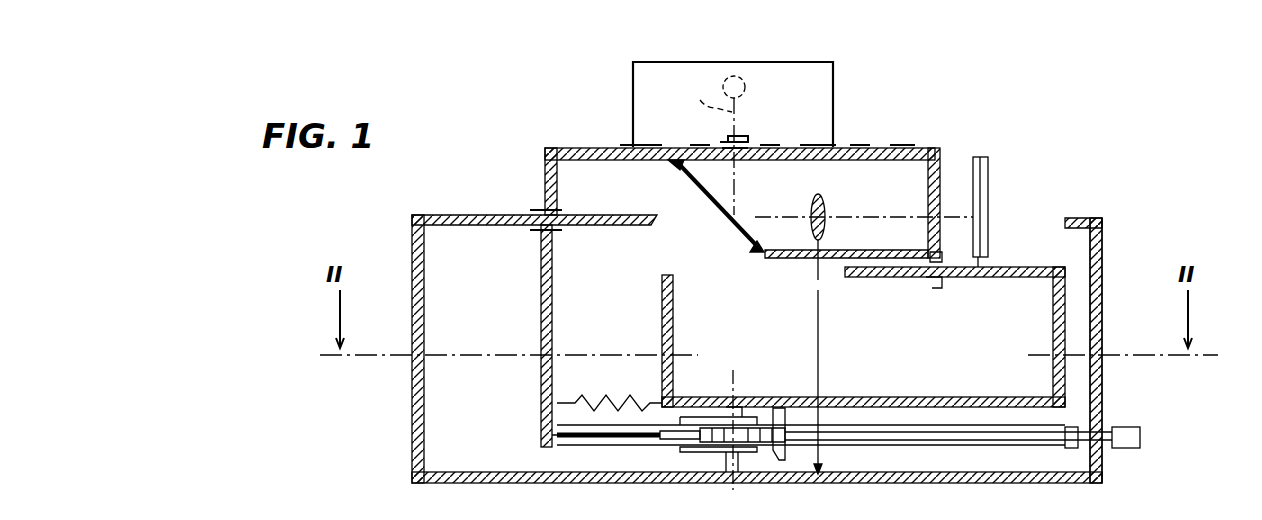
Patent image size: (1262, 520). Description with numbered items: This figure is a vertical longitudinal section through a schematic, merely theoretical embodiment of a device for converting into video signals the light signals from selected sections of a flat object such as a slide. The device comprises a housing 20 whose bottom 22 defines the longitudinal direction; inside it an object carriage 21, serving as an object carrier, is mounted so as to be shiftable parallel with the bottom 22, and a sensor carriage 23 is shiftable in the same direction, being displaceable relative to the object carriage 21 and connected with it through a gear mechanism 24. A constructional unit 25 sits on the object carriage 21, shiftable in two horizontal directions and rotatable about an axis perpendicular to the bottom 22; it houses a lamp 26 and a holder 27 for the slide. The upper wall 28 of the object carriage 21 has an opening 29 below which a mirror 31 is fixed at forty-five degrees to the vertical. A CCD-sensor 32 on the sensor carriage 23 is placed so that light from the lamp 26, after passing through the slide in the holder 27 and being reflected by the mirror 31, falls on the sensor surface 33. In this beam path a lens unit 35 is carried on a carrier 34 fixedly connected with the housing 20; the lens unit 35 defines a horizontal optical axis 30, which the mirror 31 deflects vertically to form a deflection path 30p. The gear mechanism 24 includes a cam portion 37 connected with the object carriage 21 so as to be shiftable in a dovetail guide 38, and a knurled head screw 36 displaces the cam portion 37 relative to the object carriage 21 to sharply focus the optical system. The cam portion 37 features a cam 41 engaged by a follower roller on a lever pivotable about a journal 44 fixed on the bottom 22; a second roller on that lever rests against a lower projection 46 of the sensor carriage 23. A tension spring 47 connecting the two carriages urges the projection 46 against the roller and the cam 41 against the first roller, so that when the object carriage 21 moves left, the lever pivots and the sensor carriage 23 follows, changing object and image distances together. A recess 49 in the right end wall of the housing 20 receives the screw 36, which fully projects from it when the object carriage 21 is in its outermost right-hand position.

The housing 20 is at (1102, 480).
The object carriage 21 is at (541, 290).
The bottom 22 is at (906, 484).
The sensor carriage 23 is at (930, 397).
The gear mechanism 24 is at (700, 455).
The constructional unit 25 is at (786, 72).
The lamp 26 is at (748, 44).
The holder 27 is at (748, 136).
The upper wall 28 is at (590, 148).
The opening 29 is at (752, 160).
The optical axis 30 is at (860, 214).
The deflection path 30p is at (696, 98).
The mirror 31 is at (724, 225).
The CCD-sensor 32 is at (988, 178).
The sensor surface 33 is at (970, 170).
The carrier 34 is at (820, 332).
The lens unit 35 is at (822, 200).
The knurled head screw 36 is at (1142, 437).
The cam portion 37 is at (656, 442).
The dovetail guide 38 is at (968, 452).
The cam 41 is at (966, 425).
The journal 44 is at (738, 378).
The lower projection 46 is at (778, 462).
The tension spring 47 is at (598, 402).
The recess 49 is at (1102, 432).